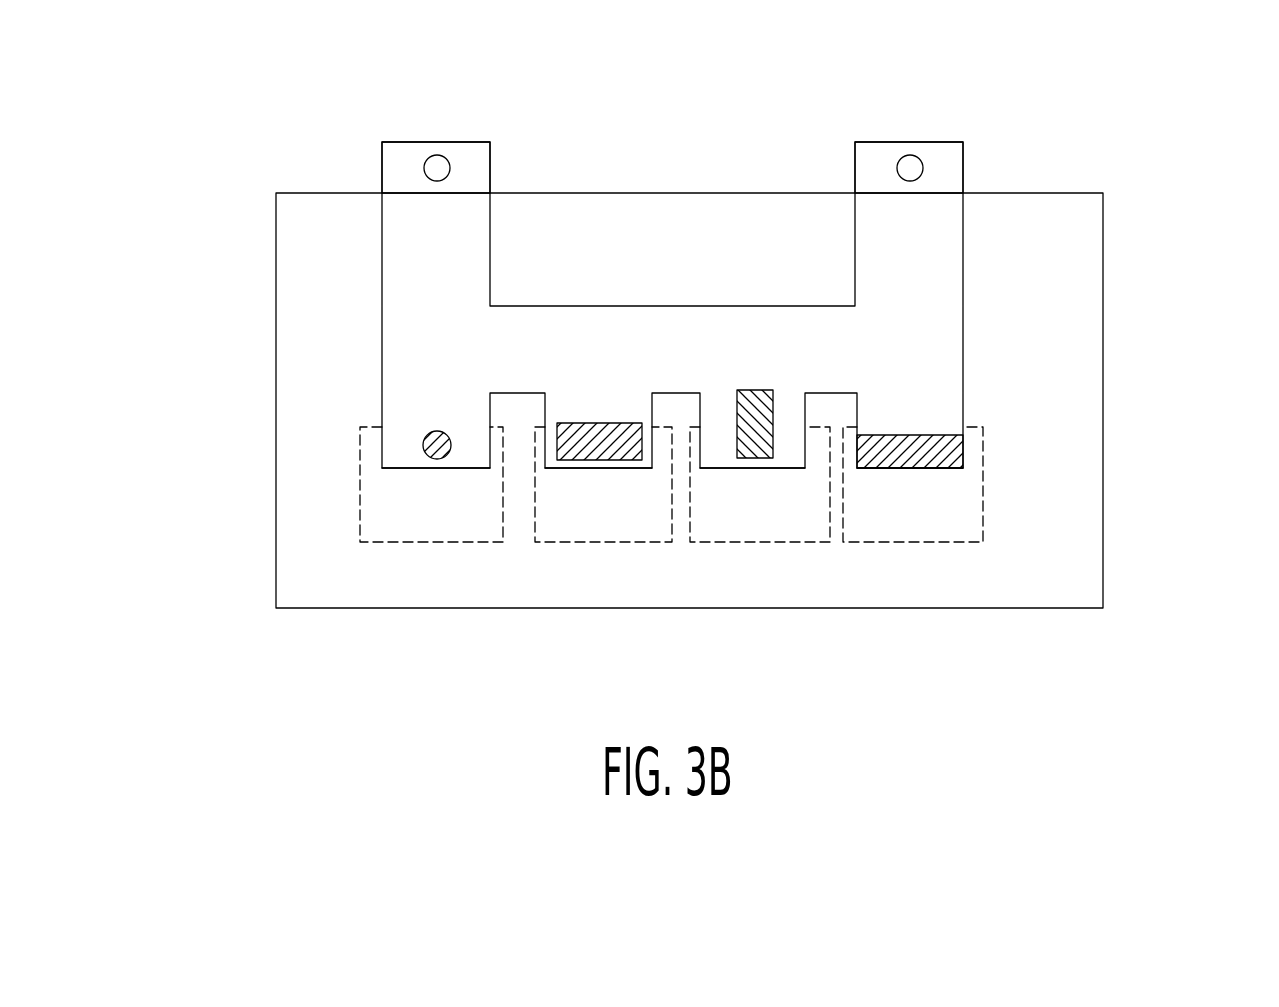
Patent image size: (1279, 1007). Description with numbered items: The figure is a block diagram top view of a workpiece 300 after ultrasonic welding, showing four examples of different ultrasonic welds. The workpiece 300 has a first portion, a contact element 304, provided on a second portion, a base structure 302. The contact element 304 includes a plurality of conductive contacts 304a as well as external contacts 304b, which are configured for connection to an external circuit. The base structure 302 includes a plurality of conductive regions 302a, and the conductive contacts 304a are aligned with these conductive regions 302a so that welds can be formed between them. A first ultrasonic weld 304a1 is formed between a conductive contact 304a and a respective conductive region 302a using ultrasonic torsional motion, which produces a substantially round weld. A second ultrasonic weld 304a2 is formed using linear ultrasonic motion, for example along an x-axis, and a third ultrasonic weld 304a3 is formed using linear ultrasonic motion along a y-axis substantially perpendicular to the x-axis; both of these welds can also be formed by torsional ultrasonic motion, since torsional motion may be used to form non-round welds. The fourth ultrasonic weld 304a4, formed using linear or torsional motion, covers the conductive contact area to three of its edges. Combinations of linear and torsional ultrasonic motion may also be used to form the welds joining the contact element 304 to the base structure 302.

The workpiece 300 is at (1172, 215).
The base structure 302 is at (276, 590).
The conductive regions 302a is at (605, 545).
The contact element 304 is at (380, 250).
The conductive contacts 304a is at (402, 469).
The first ultrasonic weld 304a1 is at (428, 437).
The second ultrasonic weld 304a2 is at (583, 422).
The third ultrasonic weld 304a3 is at (755, 390).
The fourth ultrasonic weld 304a4 is at (933, 434).
The external contacts 304b is at (440, 142).